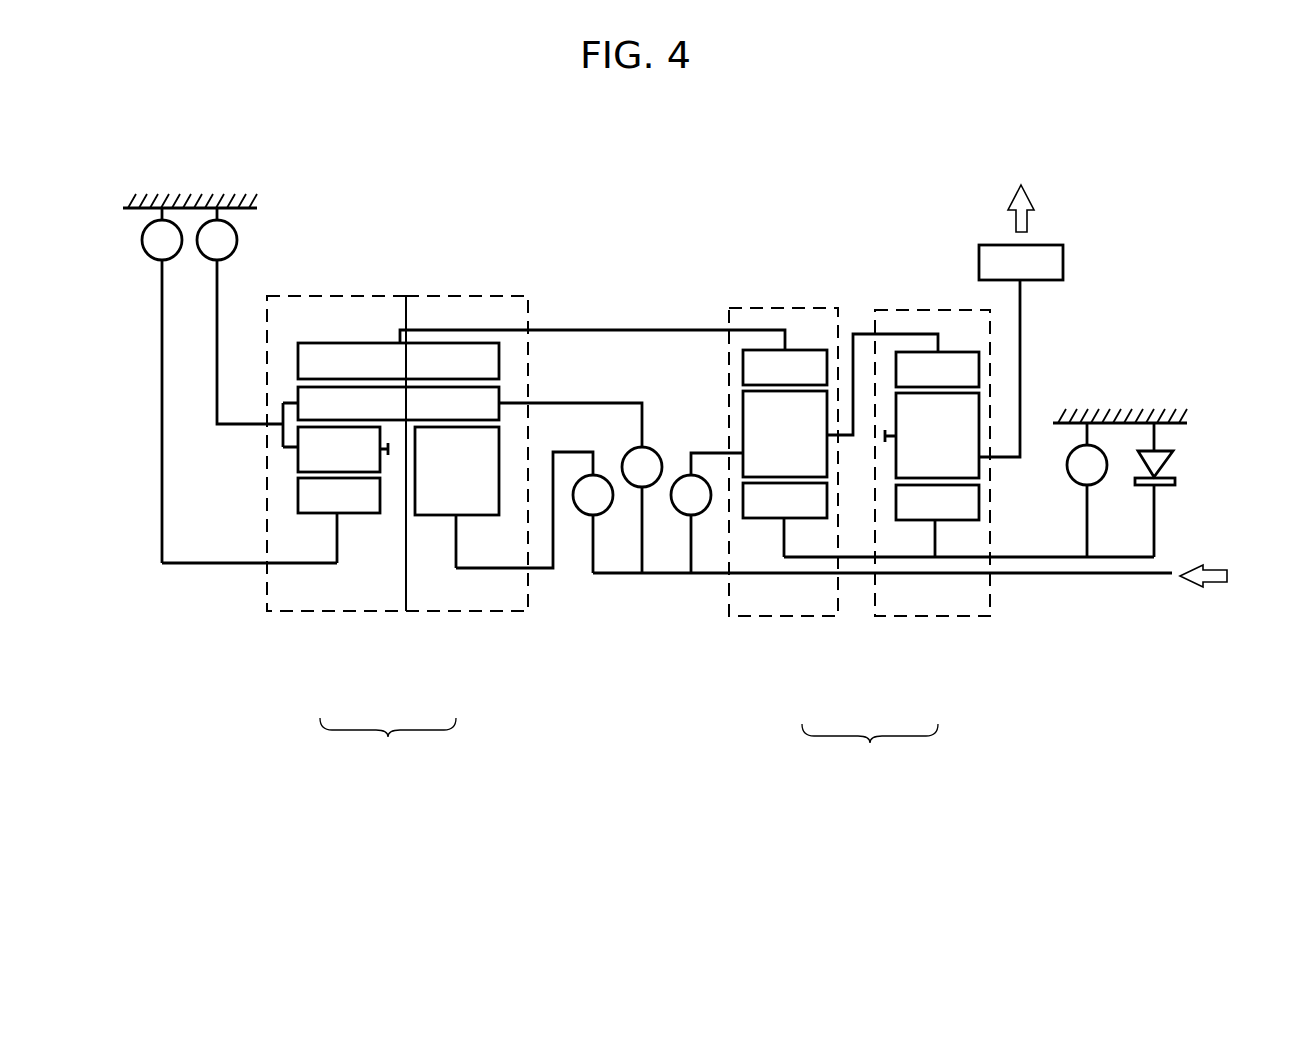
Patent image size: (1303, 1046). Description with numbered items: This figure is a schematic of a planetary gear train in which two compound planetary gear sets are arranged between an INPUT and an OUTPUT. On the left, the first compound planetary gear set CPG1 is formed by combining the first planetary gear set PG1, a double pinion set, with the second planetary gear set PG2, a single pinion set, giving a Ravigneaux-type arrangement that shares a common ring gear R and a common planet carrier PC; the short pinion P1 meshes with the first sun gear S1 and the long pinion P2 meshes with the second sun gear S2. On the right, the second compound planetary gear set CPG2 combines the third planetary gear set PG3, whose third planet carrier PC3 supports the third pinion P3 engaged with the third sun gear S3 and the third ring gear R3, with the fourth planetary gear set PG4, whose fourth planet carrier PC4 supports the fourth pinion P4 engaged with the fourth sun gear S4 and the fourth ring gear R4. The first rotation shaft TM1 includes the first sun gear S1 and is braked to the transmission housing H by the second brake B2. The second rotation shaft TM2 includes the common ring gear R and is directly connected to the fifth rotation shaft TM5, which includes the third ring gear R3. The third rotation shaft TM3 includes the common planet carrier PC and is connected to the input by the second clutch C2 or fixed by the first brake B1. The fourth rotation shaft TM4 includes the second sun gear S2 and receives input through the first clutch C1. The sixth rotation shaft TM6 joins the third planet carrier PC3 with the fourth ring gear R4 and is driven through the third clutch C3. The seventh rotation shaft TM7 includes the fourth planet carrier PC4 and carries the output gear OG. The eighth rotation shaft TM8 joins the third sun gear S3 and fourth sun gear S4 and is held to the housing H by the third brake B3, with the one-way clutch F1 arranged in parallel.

The transmission housing H is at (197, 200).
The first brake B1 is at (247, 327).
The second brake B2 is at (162, 385).
The third brake B3 is at (1087, 490).
The first clutch C1 is at (593, 524).
The second clutch C2 is at (642, 510).
The third clutch C3 is at (691, 524).
The one-way clutch F1 is at (1169, 490).
The first planetary gear set PG1 is at (330, 611).
The second planetary gear set PG2 is at (461, 611).
The third planetary gear set PG3 is at (787, 616).
The fourth planetary gear set PG4 is at (933, 616).
The first compound planetary gear set CPG1 is at (388, 745).
The second compound planetary gear set CPG2 is at (870, 750).
The short pinion P1 is at (343, 449).
The long pinion P2 is at (398, 403).
The third pinion P3 is at (785, 434).
The fourth pinion P4 is at (932, 435).
The first sun gear S1 is at (339, 520).
The second sun gear S2 is at (457, 497).
The third sun gear S3 is at (785, 520).
The fourth sun gear S4 is at (937, 521).
The common ring gear R is at (398, 361).
The third ring gear R3 is at (785, 367).
The fourth ring gear R4 is at (937, 369).
The common planet carrier PC is at (570, 400).
The third planet carrier PC3 is at (696, 442).
The fourth planet carrier PC4 is at (1017, 417).
The first rotation shaft TM1 is at (200, 566).
The second rotation shaft TM2 is at (398, 361).
The third rotation shaft TM3 is at (570, 396).
The fourth rotation shaft TM4 is at (507, 570).
The fifth rotation shaft TM5 is at (650, 328).
The sixth rotation shaft TM6 is at (852, 345).
The seventh rotation shaft TM7 is at (1013, 462).
The eighth rotation shaft TM8 is at (1043, 560).
The output gear OG is at (1021, 262).
The input INPUT is at (946, 576).
The output OUTPUT is at (1021, 190).